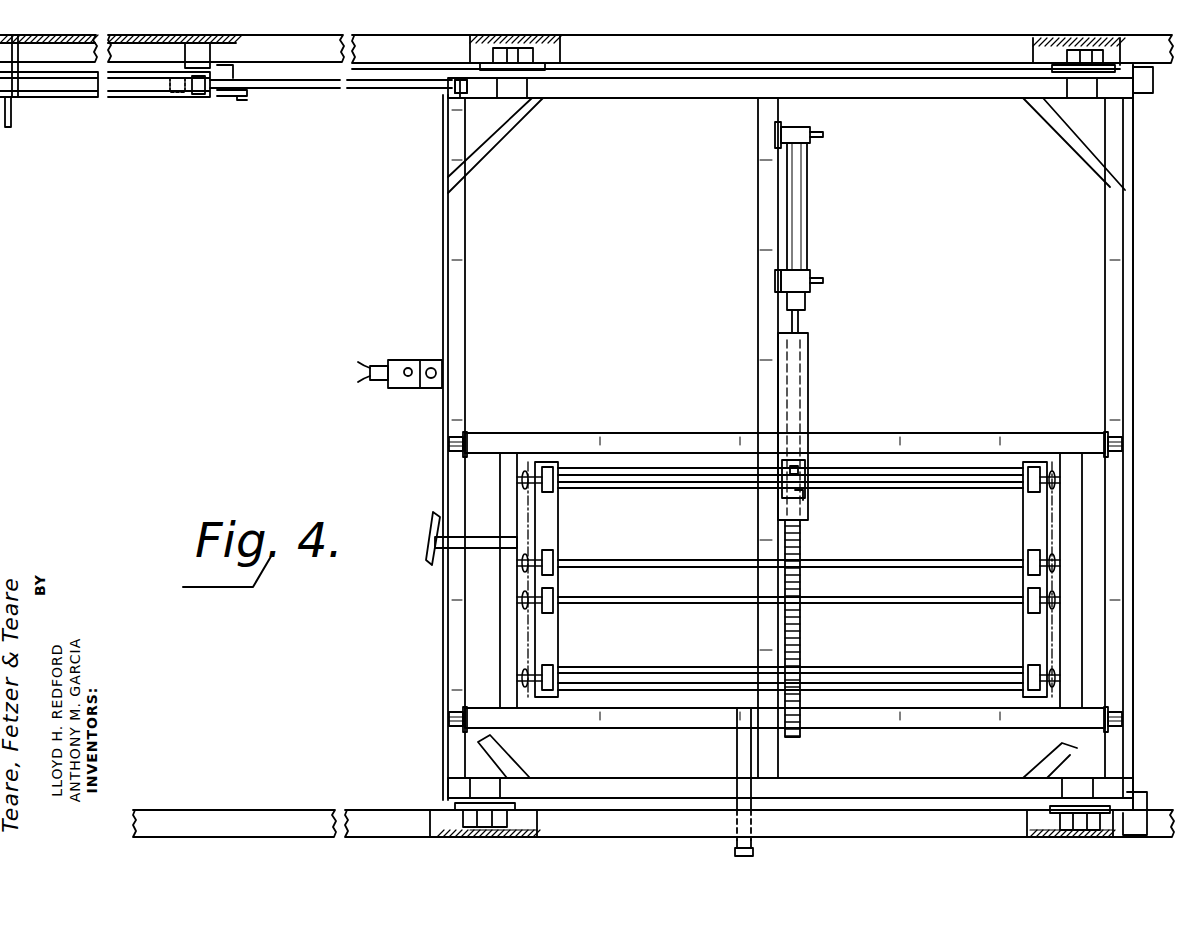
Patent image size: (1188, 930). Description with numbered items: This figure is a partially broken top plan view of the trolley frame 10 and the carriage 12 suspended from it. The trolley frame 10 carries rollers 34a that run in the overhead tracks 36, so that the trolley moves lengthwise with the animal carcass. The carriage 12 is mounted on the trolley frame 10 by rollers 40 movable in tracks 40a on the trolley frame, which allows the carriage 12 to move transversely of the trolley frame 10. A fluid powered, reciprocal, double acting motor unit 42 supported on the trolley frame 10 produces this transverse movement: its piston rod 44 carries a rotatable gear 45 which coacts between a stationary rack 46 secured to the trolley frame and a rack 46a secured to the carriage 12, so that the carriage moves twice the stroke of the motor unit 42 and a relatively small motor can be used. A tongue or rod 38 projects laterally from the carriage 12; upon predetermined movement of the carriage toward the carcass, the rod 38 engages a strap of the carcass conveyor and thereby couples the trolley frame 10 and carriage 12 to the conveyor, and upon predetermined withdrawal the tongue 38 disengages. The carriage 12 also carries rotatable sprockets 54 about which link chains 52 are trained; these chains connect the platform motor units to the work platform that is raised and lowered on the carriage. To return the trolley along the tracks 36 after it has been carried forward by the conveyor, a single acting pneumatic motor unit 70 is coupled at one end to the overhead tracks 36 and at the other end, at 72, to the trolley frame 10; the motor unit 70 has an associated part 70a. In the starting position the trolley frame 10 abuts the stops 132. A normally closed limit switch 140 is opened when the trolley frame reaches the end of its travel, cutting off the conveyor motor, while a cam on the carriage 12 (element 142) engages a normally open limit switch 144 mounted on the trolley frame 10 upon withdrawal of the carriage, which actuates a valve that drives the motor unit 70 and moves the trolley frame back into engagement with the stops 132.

The trolley frame 10 is at (470, 250).
The carriage 12 is at (898, 432).
The rollers 34a is at (533, 52).
The overhead tracks 36 is at (648, 56).
The tongue or rod 38 is at (733, 845).
The rollers 40 is at (450, 445).
The tracks 40a is at (443, 253).
The double acting motor unit 42 is at (806, 213).
The piston rod 44 is at (800, 322).
The rotatable gear 45 is at (806, 503).
The stationary rack 46 is at (808, 398).
The rack 46a is at (800, 590).
The link chains 52 is at (530, 535).
The sprockets 54 is at (524, 484).
The single acting motor unit 70 is at (78, 96).
The guide post 70a is at (12, 122).
The coupling point 72 is at (455, 100).
The stops 132 is at (1142, 88).
The limit switch 140 is at (237, 74).
The lever 142 is at (428, 528).
The limit switch 144 is at (400, 388).